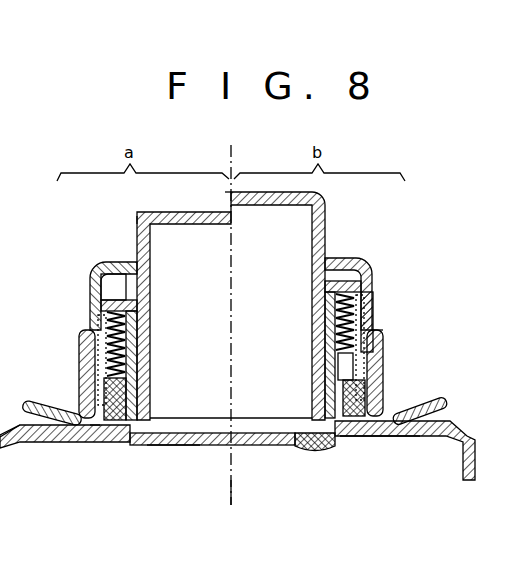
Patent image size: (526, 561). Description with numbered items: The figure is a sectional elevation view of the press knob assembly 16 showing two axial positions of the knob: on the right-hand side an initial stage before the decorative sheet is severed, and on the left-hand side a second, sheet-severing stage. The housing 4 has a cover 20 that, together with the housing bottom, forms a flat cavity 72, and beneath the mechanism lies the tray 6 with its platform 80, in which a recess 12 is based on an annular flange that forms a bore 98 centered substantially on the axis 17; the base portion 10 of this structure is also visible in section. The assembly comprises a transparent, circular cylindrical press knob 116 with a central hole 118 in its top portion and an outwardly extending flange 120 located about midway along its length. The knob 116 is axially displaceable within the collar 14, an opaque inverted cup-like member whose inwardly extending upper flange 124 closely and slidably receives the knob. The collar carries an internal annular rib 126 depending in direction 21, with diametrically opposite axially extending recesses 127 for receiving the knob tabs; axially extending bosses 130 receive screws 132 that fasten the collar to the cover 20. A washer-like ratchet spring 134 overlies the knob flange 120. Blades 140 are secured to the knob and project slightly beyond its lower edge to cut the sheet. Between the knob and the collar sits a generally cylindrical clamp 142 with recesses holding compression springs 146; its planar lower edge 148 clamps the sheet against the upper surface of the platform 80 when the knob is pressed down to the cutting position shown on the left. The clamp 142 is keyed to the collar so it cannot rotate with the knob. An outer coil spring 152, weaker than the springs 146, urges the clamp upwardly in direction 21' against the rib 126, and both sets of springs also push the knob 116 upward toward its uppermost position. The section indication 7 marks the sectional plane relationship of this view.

The housing 4 is at (15, 417).
The tray 6 is at (428, 440).
The section line 7- 7 is at (86, 275).
The base plate 10 is at (205, 455).
The recess 12 is at (300, 432).
The collar 14 is at (376, 334).
The press knob assembly 16 is at (332, 233).
The axis 17 is at (231, 490).
The cover 20 is at (31, 406).
The direction 21 is at (194, 278).
The direction 21' is at (288, 274).
The cavity 72 is at (390, 440).
The platform 80 is at (423, 423).
The bore 98 is at (178, 448).
The press knob 116 is at (137, 224).
The central hole 118 is at (228, 210).
The flange 120 is at (115, 306).
The flange 124 is at (353, 262).
The annular rib 126 is at (137, 262).
The recess 127 is at (375, 298).
The boss 130 is at (79, 346).
The screw 132 is at (93, 430).
The ratchet spring 134 is at (118, 300).
The blade 140 is at (131, 370).
The clamp 142 is at (130, 412).
The compression spring 146 is at (122, 342).
The lower edge 148 is at (337, 450).
The outer coil spring 152 is at (376, 386).